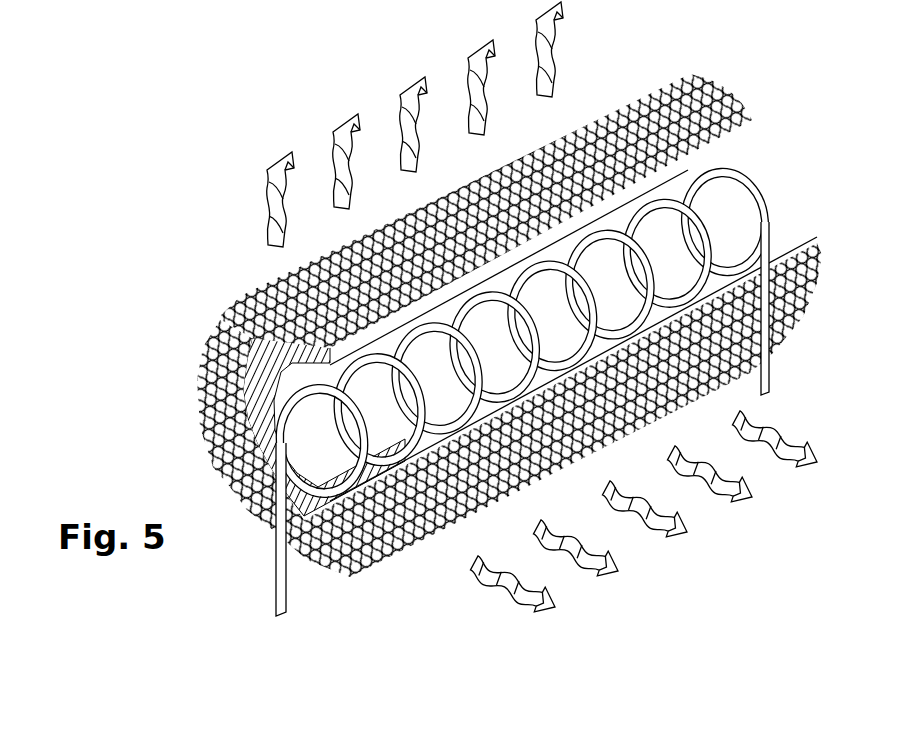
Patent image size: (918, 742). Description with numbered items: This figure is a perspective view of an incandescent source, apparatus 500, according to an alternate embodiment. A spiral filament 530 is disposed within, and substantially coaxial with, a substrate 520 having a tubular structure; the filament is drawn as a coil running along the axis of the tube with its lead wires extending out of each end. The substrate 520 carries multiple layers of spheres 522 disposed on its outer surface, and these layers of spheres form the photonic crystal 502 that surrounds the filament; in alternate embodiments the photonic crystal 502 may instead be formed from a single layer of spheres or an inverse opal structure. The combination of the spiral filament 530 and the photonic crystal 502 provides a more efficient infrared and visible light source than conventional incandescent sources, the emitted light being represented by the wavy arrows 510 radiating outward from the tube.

The apparatus 500 is at (724, 41).
The photonic crystal 502 is at (190, 378).
The arrows 510 is at (560, 14).
The substrate 520 is at (262, 347).
The spheres 522 is at (730, 100).
The spiral filament 530 is at (730, 173).